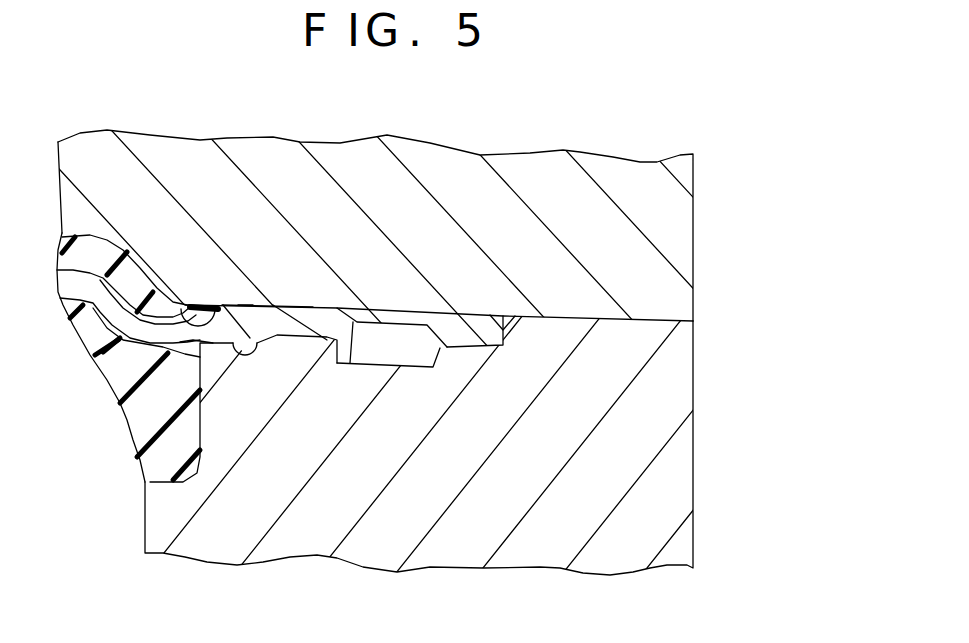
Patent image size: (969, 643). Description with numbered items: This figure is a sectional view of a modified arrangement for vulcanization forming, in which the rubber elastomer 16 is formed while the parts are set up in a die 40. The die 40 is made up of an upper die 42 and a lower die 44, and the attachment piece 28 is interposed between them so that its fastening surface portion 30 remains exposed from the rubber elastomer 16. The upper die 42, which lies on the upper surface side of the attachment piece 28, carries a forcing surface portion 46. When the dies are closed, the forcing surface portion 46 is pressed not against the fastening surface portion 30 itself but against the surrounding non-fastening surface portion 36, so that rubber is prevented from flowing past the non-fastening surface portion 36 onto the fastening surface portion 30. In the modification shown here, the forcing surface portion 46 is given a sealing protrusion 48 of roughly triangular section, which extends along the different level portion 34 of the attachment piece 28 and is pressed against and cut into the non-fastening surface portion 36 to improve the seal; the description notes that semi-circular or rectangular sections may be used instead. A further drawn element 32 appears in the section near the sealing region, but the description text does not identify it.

The rubber elastomer 16 is at (131, 357).
The attachment piece 28 is at (263, 471).
The fastening surface portion 30 is at (542, 221).
The rib projection 32 is at (392, 465).
The different level portion 34 is at (306, 198).
The non-fastening surface portion 36 is at (232, 192).
The die 40 is at (445, 356).
The upper die 42 is at (423, 234).
The lower die 44 is at (462, 436).
The forcing surface portion 46 is at (165, 200).
The sealing protrusion 48 is at (246, 485).